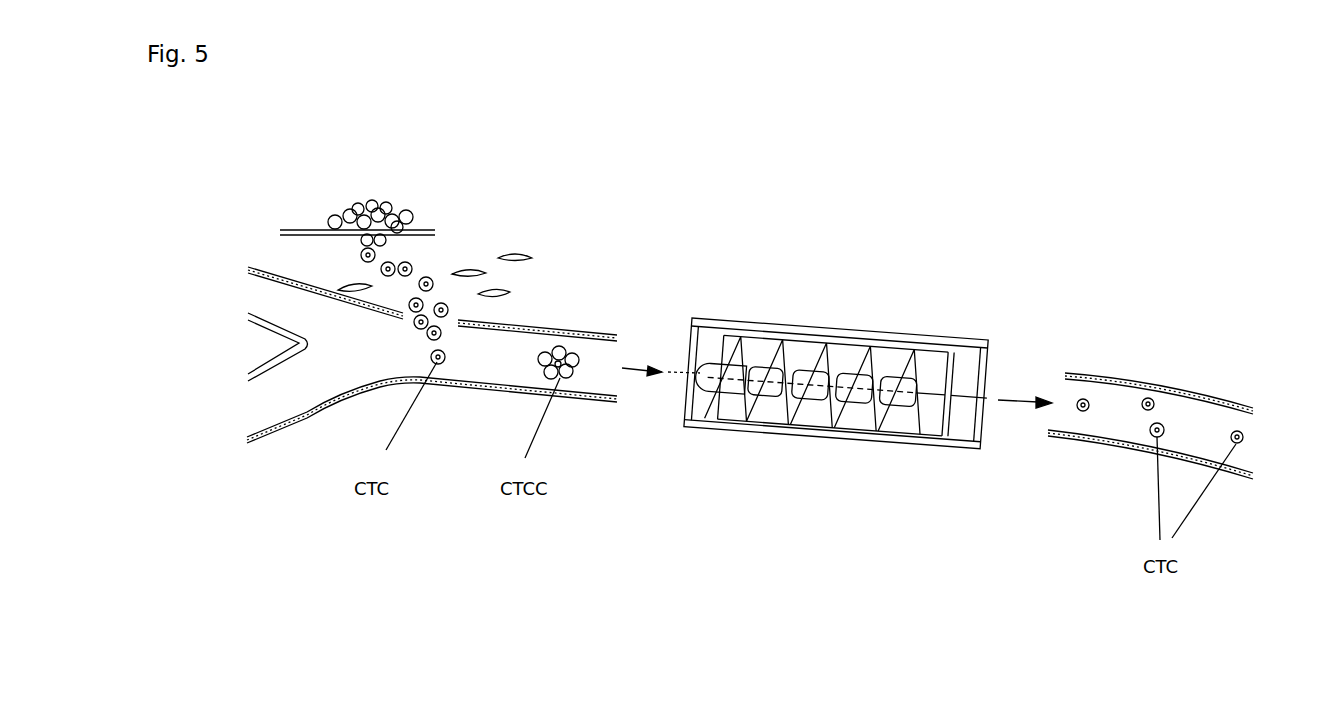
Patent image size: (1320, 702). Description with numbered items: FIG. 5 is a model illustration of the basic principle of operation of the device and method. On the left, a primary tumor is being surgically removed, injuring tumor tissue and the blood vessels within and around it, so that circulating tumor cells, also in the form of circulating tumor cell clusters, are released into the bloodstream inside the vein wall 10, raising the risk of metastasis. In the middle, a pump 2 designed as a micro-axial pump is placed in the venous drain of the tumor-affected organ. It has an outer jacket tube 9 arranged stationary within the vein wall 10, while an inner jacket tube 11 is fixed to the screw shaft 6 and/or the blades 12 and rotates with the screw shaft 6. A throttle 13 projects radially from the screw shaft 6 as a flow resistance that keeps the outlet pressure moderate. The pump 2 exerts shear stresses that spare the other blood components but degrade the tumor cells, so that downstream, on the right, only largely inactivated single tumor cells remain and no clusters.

The pump 2 is at (840, 293).
The screw shaft 6 is at (812, 418).
The outer jacket tube 9 is at (917, 340).
The vein wall 10 is at (572, 325).
The inner jacket tube 11 is at (771, 338).
The blades 12 is at (755, 422).
The throttle 13 is at (920, 422).